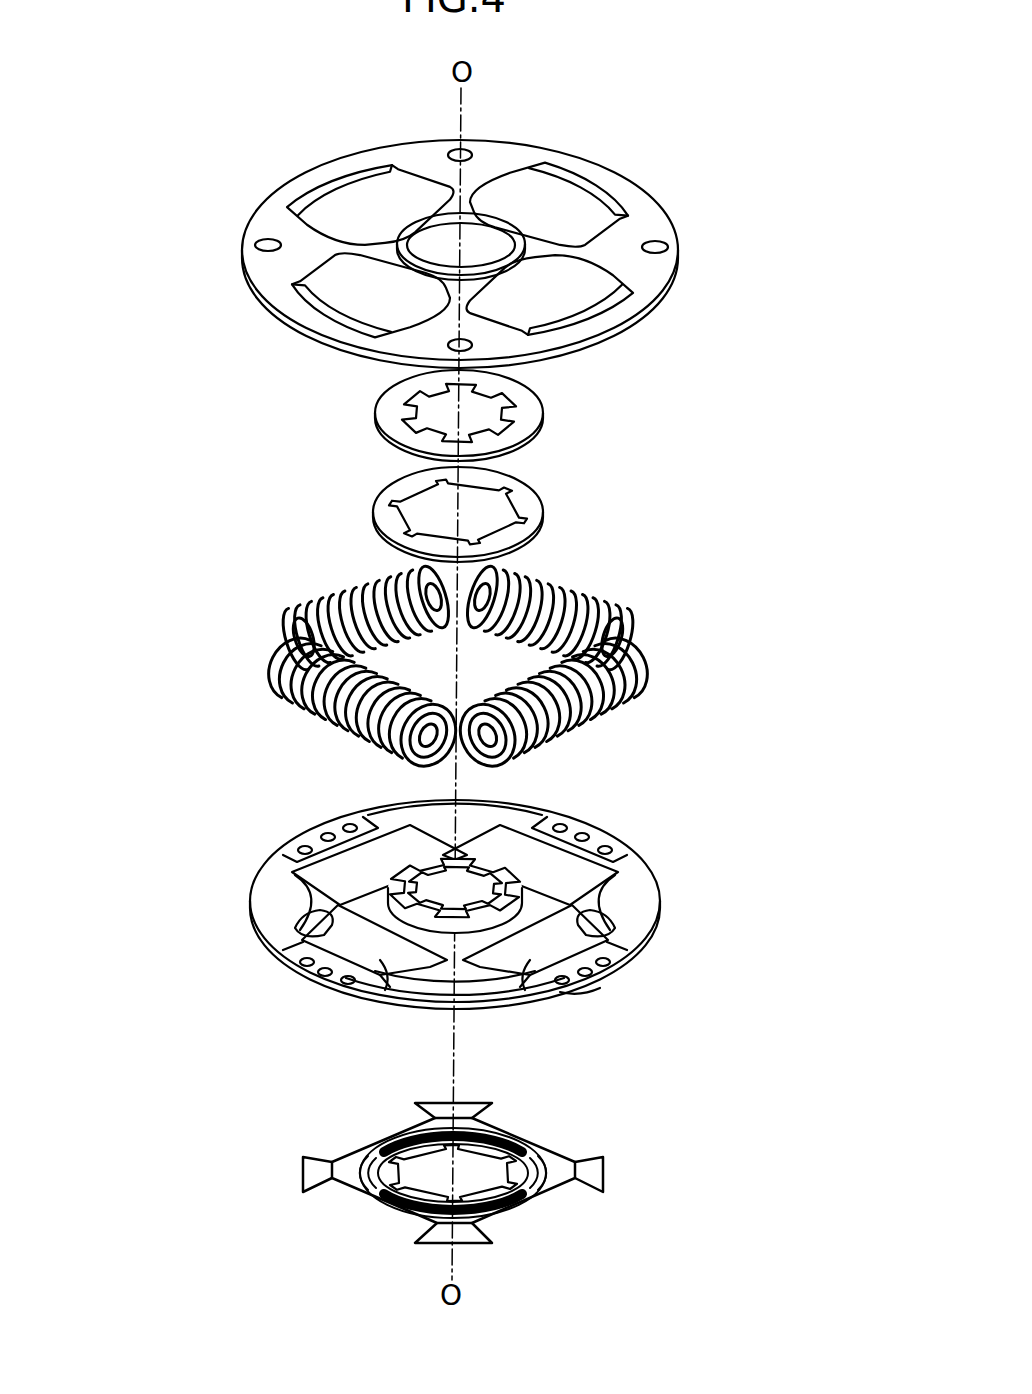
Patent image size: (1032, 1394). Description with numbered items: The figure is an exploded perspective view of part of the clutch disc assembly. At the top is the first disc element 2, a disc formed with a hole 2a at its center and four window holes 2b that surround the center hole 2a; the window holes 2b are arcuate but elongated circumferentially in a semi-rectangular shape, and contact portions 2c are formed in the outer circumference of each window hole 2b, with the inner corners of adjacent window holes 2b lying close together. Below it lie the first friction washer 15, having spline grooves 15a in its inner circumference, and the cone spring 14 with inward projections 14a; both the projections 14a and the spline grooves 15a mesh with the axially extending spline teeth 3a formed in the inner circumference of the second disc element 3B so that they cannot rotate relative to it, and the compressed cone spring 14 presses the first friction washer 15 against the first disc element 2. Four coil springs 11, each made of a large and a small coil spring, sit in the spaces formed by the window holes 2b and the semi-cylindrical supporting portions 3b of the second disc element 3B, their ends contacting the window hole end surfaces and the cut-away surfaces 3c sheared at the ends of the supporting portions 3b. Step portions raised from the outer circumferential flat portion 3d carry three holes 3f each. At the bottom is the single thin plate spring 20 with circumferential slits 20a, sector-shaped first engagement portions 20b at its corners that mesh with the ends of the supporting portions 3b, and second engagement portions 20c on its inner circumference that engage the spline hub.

The first disc element 2 is at (518, 140).
The hole 2a is at (480, 230).
The window holes 2b is at (323, 217).
The contact portions 2c is at (383, 167).
The first friction washer 15 is at (530, 412).
The spline grooves 15a is at (400, 410).
The cone spring 14 is at (530, 494).
The projections 14a is at (385, 492).
The coil springs 11 is at (375, 590).
The second disc element 3B is at (648, 885).
The spline teeth 3a is at (503, 937).
The supporting portions 3b is at (393, 997).
The cut-away surfaces 3c is at (627, 932).
The outer circumferential flat portion 3d is at (280, 893).
The holes 3f is at (583, 993).
The spring 20 is at (517, 1133).
The slits 20a is at (520, 1190).
The first engagement portions 20b is at (600, 1173).
The second engagement portions 20c is at (392, 1133).